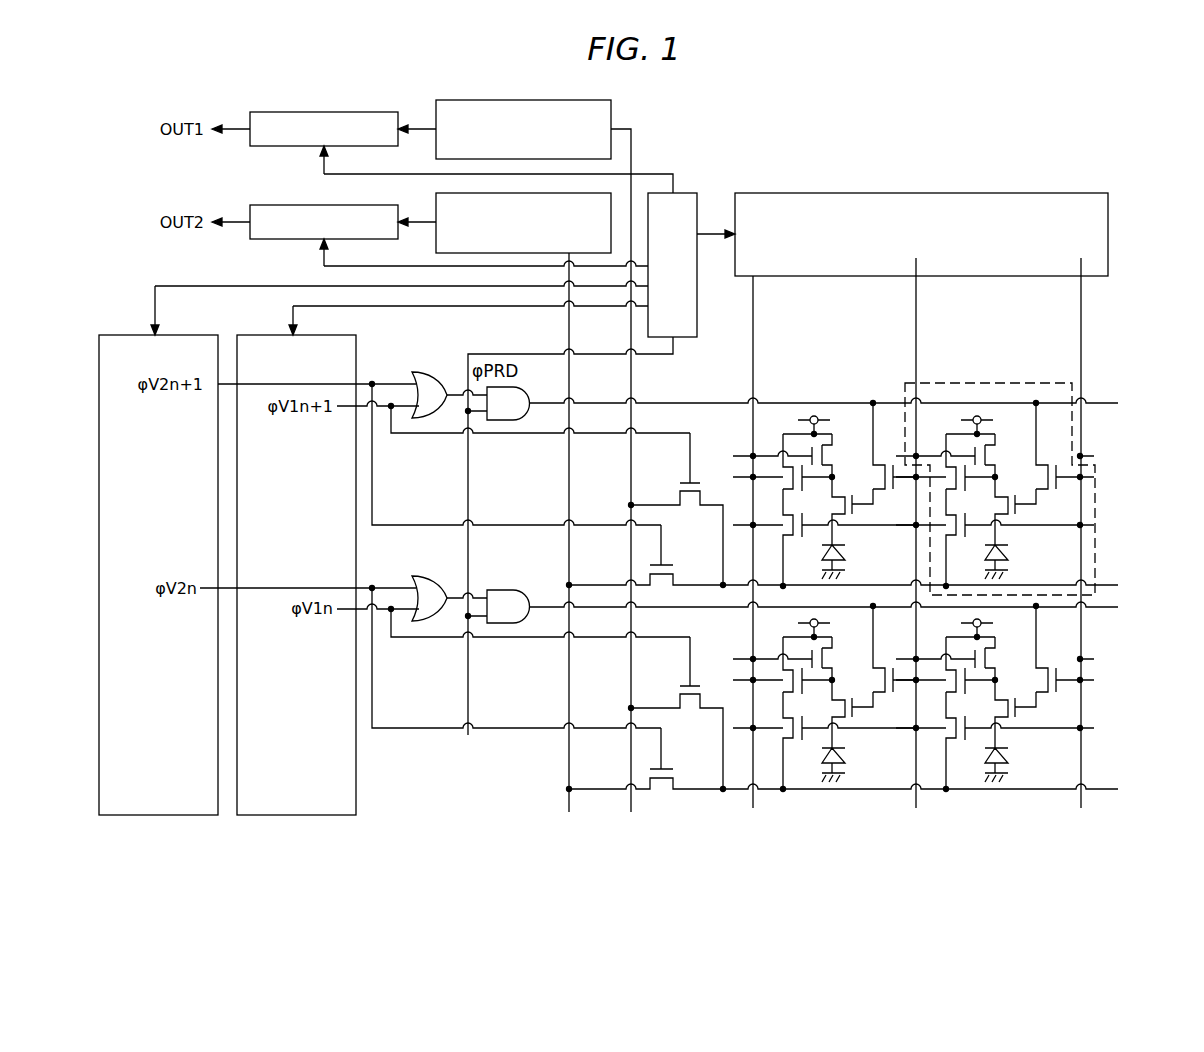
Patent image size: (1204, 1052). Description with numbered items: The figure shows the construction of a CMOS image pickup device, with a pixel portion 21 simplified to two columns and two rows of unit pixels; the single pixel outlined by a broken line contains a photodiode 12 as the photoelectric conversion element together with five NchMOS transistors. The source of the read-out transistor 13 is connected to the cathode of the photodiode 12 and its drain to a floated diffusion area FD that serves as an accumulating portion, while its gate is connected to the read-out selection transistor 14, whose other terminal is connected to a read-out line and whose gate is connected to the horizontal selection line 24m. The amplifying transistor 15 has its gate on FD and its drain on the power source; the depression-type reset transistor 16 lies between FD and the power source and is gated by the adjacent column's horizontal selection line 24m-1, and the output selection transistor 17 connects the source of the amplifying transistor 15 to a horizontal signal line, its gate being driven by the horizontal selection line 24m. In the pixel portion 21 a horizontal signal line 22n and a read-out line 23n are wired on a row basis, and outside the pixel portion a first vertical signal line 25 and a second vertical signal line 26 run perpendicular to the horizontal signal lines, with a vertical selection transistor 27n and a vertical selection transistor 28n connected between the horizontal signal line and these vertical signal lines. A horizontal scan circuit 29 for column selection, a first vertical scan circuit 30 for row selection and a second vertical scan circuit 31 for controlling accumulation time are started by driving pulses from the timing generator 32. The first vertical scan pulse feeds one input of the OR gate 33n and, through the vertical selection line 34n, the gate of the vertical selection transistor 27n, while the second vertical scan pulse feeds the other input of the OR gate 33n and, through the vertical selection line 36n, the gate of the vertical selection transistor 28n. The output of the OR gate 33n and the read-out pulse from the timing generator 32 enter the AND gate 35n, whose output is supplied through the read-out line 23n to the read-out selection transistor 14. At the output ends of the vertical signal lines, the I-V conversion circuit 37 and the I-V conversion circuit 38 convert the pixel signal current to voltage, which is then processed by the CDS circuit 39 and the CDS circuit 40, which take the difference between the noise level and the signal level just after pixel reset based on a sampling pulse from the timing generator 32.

The photodiode 12 is at (1012, 552).
The read-out transistor 13 is at (1020, 523).
The read-out selection transistor 14 is at (1039, 466).
The amplifying transistor 15 is at (955, 496).
The reset transistor 16 is at (997, 452).
The output selection transistor 17 is at (950, 538).
The pixel portion 21 is at (1035, 465).
The horizontal signal line 22n is at (1124, 775).
The read-out line 23n is at (1104, 608).
The horizontal selection line 24m is at (1082, 322).
The horizontal selection line 24m-1 is at (917, 322).
The first vertical signal line 25 is at (631, 807).
The second vertical signal line 26 is at (569, 807).
The vertical selection transistor 27n is at (688, 709).
The vertical selection transistor 28n is at (660, 793).
The horizontal scan circuit 29 is at (922, 192).
The first vertical scan circuit 30 is at (250, 334).
The second vertical scan circuit 31 is at (112, 334).
The timing generator 32 is at (676, 192).
The OR gate 33n is at (421, 577).
The vertical selection line 34n is at (524, 638).
The AND gate 35n is at (524, 577).
The vertical selection line 36n is at (487, 728).
The I-V conversion circuit 37 is at (436, 246).
The I-V conversion circuit 38 is at (612, 122).
The CDS circuit 39 is at (287, 205).
The CDS circuit 40 is at (287, 112).